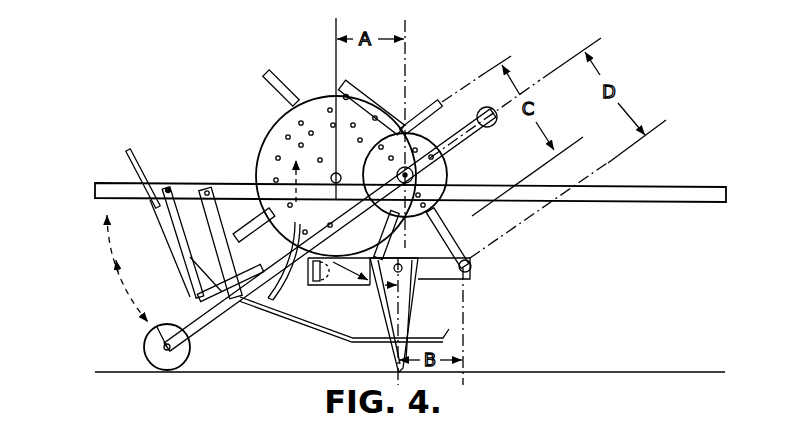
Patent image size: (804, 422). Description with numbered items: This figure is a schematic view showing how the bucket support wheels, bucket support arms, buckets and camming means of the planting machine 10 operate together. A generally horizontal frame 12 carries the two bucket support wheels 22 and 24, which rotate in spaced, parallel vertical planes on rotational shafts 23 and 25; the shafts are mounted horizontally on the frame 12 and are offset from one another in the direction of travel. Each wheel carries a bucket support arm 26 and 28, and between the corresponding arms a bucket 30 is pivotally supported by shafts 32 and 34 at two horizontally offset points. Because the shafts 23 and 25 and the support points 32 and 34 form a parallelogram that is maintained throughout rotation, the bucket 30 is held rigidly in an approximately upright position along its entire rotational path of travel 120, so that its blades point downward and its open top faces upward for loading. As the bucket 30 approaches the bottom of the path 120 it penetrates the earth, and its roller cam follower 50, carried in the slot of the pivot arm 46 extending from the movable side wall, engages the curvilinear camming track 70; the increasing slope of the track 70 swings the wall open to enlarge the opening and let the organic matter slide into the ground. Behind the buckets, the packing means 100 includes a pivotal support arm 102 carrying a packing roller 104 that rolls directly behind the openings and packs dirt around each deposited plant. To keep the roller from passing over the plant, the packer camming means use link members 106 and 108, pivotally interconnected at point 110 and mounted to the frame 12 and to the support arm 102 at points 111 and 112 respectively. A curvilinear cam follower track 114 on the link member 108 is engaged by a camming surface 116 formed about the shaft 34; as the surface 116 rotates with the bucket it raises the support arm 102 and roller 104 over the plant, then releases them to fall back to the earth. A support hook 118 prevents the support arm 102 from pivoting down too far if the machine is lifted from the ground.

The planting machine 10 is at (198, 113).
The frame 12 is at (648, 186).
The bucket support wheel 22 is at (380, 100).
The rotational shaft 23 is at (336, 172).
The bucket support wheel 24 is at (455, 146).
The rotational shaft 25 is at (420, 176).
The bucket support arm 26 is at (400, 246).
The bucket support arm 28 is at (440, 226).
The bucket 30 is at (455, 302).
The shaft 32 is at (403, 266).
The shaft 34 is at (471, 277).
The pivot arm 46 is at (343, 286).
The roller cam follower 50 is at (308, 271).
The camming track 70 is at (330, 336).
The packing means 100 is at (115, 297).
The support arm 102 is at (190, 338).
The packing roller 104 is at (143, 348).
The link member 106 is at (178, 225).
The link member 108 is at (268, 236).
The pivot point 110 is at (199, 296).
The pivot point 111 is at (168, 190).
The pivot point 112 is at (263, 280).
The cam follower track 114 is at (301, 227).
The camming surface 116 is at (473, 266).
The support hook 118 is at (224, 228).
The rotational path of travel 120 is at (433, 283).